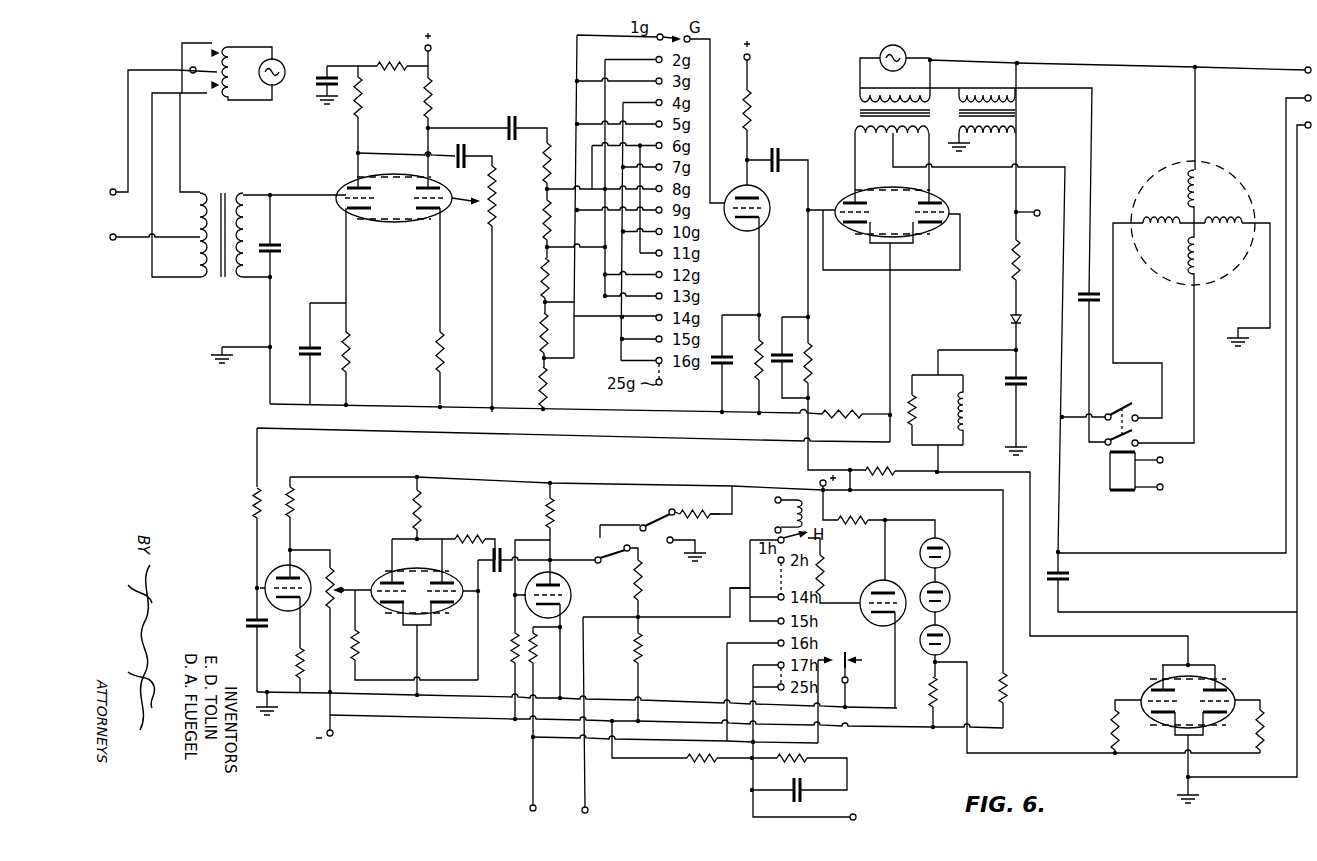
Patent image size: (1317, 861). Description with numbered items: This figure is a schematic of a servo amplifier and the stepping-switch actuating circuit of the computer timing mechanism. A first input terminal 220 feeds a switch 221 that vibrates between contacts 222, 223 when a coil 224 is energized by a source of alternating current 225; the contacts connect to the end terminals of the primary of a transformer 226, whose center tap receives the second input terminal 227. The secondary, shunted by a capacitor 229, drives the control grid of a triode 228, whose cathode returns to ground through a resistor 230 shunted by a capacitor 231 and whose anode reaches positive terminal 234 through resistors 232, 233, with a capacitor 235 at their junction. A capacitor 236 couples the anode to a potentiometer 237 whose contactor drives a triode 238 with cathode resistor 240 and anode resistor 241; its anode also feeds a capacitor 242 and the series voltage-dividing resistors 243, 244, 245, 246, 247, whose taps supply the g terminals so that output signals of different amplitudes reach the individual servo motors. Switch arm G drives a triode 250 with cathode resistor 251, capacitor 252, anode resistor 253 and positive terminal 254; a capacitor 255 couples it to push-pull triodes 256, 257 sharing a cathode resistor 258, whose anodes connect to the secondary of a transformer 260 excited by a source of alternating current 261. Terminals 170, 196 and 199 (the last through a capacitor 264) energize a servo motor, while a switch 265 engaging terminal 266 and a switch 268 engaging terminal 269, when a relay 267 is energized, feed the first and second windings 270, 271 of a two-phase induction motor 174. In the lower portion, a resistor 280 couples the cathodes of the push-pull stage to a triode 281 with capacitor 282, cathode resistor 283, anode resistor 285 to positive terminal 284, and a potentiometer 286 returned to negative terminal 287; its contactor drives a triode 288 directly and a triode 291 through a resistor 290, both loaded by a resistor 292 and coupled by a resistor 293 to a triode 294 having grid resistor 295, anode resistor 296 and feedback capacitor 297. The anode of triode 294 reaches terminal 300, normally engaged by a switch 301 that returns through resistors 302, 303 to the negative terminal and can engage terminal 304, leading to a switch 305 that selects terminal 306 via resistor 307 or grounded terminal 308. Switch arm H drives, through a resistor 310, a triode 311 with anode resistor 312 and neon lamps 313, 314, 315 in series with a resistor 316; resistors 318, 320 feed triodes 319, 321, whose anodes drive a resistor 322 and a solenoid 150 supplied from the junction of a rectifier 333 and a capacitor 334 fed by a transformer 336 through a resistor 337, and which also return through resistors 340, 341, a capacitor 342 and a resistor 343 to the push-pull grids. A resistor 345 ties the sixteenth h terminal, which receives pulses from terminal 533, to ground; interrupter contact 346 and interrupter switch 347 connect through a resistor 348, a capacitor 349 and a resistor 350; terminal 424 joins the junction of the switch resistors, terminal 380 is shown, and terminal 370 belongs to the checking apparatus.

The solenoid 150 is at (958, 402).
The terminal 170 is at (1301, 123).
The two-phase induction motor 174 is at (1224, 169).
The terminal 196 is at (1305, 68).
The terminal 199 is at (1302, 95).
The first input terminal 220 is at (143, 145).
The switch 221 is at (218, 46).
The contact 222 is at (207, 45).
The contact 223 is at (214, 96).
The coil 224 is at (256, 50).
The source of alternating current 225 is at (294, 73).
The transformer 226 is at (230, 190).
The second input terminal 227 is at (155, 248).
The triode 228 is at (348, 176).
The capacitor 229 is at (284, 254).
The resistor 230 is at (353, 349).
The capacitor 231 is at (303, 358).
The resistor 232 is at (370, 104).
The resistor 233 is at (395, 57).
The terminal 234 is at (438, 53).
The capacitor 235 is at (308, 95).
The capacitor 236 is at (461, 142).
The potentiometer 237 is at (488, 223).
The triode 238 is at (446, 195).
The resistor 240 is at (431, 378).
The resistor 241 is at (438, 98).
The capacitor 242 is at (518, 120).
The resistor 243 is at (543, 163).
The resistor 244 is at (541, 225).
The resistor 245 is at (540, 288).
The resistor 246 is at (540, 345).
The resistor 247 is at (543, 402).
The triode 250 is at (768, 229).
The resistor 251 is at (762, 331).
The capacitor 252 is at (712, 363).
The resistor 253 is at (758, 109).
The terminal 254 is at (754, 57).
The capacitor 255 is at (780, 156).
The triode 256 is at (849, 188).
The triode 257 is at (948, 194).
The resistor 258 is at (844, 411).
The transformer 260 is at (853, 106).
The source of alternating current 261 is at (907, 56).
The capacitor 264 is at (1102, 298).
The switch 265 is at (1128, 406).
The terminal 266 is at (1138, 427).
The relay 267 is at (1127, 490).
The switch 268 is at (1083, 442).
The terminal 269 is at (1159, 460).
The first winding 270 is at (1182, 214).
The second winding 271 is at (1185, 250).
The resistor 280 is at (251, 492).
The triode 281 is at (278, 569).
The capacitor 282 is at (249, 619).
The resistor 283 is at (298, 667).
The positive potential terminal 284 is at (823, 483).
The resistor 285 is at (297, 497).
The potentiometer 286 is at (333, 577).
The negative potential terminal 287 is at (331, 734).
The triode 288 is at (379, 568).
The resistor 290 is at (359, 664).
The triode 291 is at (464, 622).
The resistor 292 is at (419, 500).
The resistor 293 is at (489, 524).
The triode 294 is at (574, 597).
The resistor 295 is at (505, 655).
The resistor 296 is at (557, 514).
The capacitor 297 is at (496, 542).
The terminal 300 is at (594, 570).
The switch 301 is at (597, 553).
The resistor 302 is at (649, 587).
The resistor 303 is at (647, 660).
The terminal 304 is at (594, 540).
The switch 305 is at (656, 524).
The terminal 306 is at (674, 515).
The resistor 307 is at (701, 520).
The terminal 308 is at (667, 540).
The resistor 310 is at (825, 568).
The triode 311 is at (872, 593).
The resistor 312 is at (863, 522).
The neon lamp 313 is at (946, 543).
The neon lamp 314 is at (946, 587).
The neon lamp 315 is at (946, 630).
The resistor 316 is at (925, 698).
The resistor 318 is at (1105, 725).
The triode 319 is at (1150, 680).
The resistor 320 is at (1254, 737).
The triode 321 is at (1232, 687).
The resistor 322 is at (914, 426).
The rectifier 333 is at (1006, 323).
The capacitor 334 is at (1028, 382).
The transformer 336 is at (1027, 115).
The resistor 337 is at (1008, 278).
The resistor 340 is at (895, 470).
The resistor 341 is at (816, 368).
The capacitor 342 is at (790, 352).
The resistor 343 is at (1011, 689).
The resistor 345 is at (532, 660).
The first interrupter contact 346 is at (824, 660).
The interrupter switch 347 is at (848, 679).
The resistor 348 is at (804, 762).
The capacitor 349 is at (805, 797).
The resistor 350 is at (695, 762).
The terminal 370 is at (1037, 211).
The terminal 380 is at (856, 815).
The terminal 424 is at (587, 809).
The terminal 533 is at (532, 808).